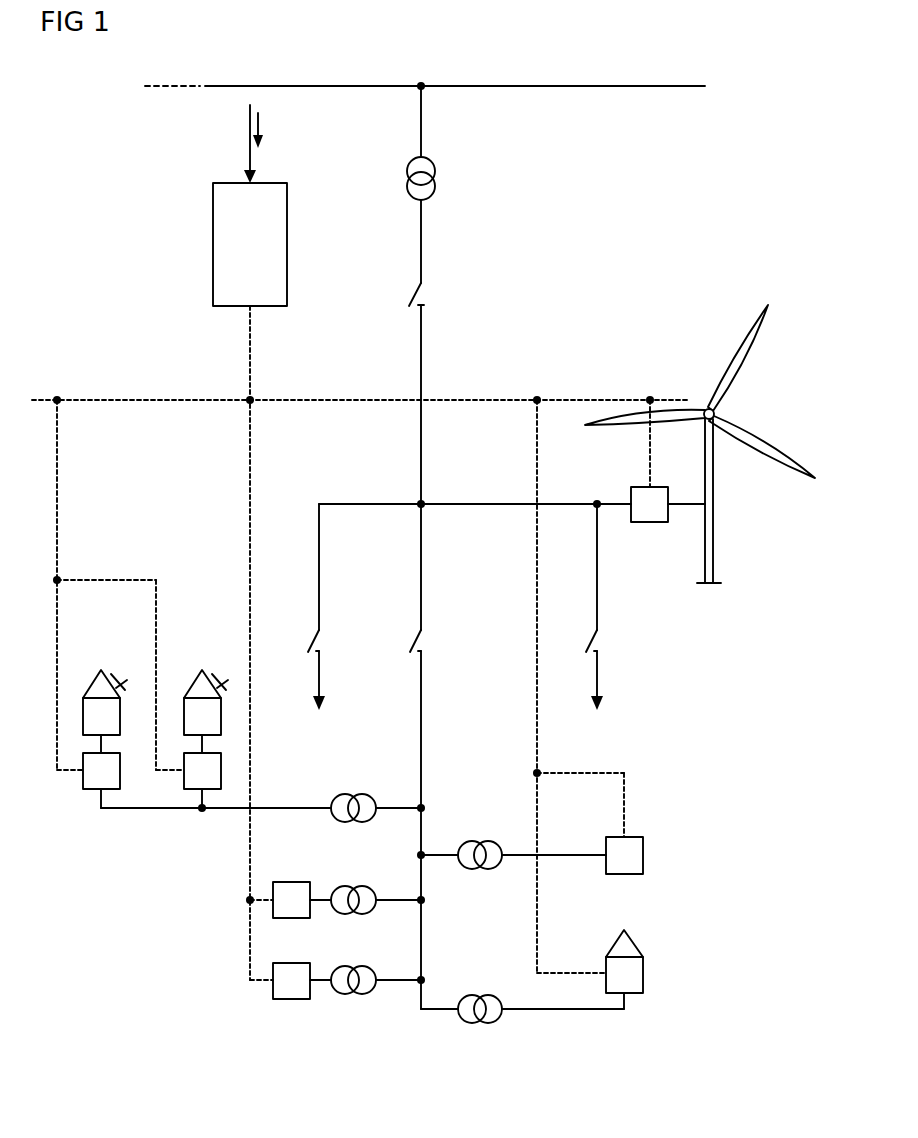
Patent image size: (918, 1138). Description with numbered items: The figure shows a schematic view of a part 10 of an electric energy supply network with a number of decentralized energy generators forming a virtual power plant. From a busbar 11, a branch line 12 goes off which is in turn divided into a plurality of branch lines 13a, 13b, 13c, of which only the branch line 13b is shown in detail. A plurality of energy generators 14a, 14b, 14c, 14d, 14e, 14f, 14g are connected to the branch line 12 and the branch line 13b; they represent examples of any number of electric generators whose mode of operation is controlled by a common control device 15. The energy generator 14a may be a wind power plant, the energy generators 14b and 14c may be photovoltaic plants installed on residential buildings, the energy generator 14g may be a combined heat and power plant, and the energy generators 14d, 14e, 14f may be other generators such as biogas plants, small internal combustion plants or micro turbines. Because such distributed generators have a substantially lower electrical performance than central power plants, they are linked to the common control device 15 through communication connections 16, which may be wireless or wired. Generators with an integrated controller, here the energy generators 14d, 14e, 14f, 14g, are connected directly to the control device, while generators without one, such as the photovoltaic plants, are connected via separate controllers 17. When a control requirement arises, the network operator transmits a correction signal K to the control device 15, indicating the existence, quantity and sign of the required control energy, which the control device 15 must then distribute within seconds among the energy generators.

The part of an energy supply network 10 is at (655, 190).
The busbar 11 is at (597, 85).
The branch line 12 is at (422, 338).
The branch line 13a is at (320, 592).
The branch line 13b is at (422, 592).
The branch line 13c is at (598, 592).
The energy generator 14a is at (759, 390).
The energy generator 14b is at (96, 670).
The energy generator 14c is at (197, 670).
The energy generator 14d is at (291, 882).
The energy generator 14e is at (292, 998).
The energy generator 14f is at (644, 855).
The energy generator 14g is at (644, 976).
The common control device 15 is at (213, 245).
The communication connections 16 is at (375, 398).
The separate controller 17 is at (92, 790).
The correction signal K is at (260, 118).